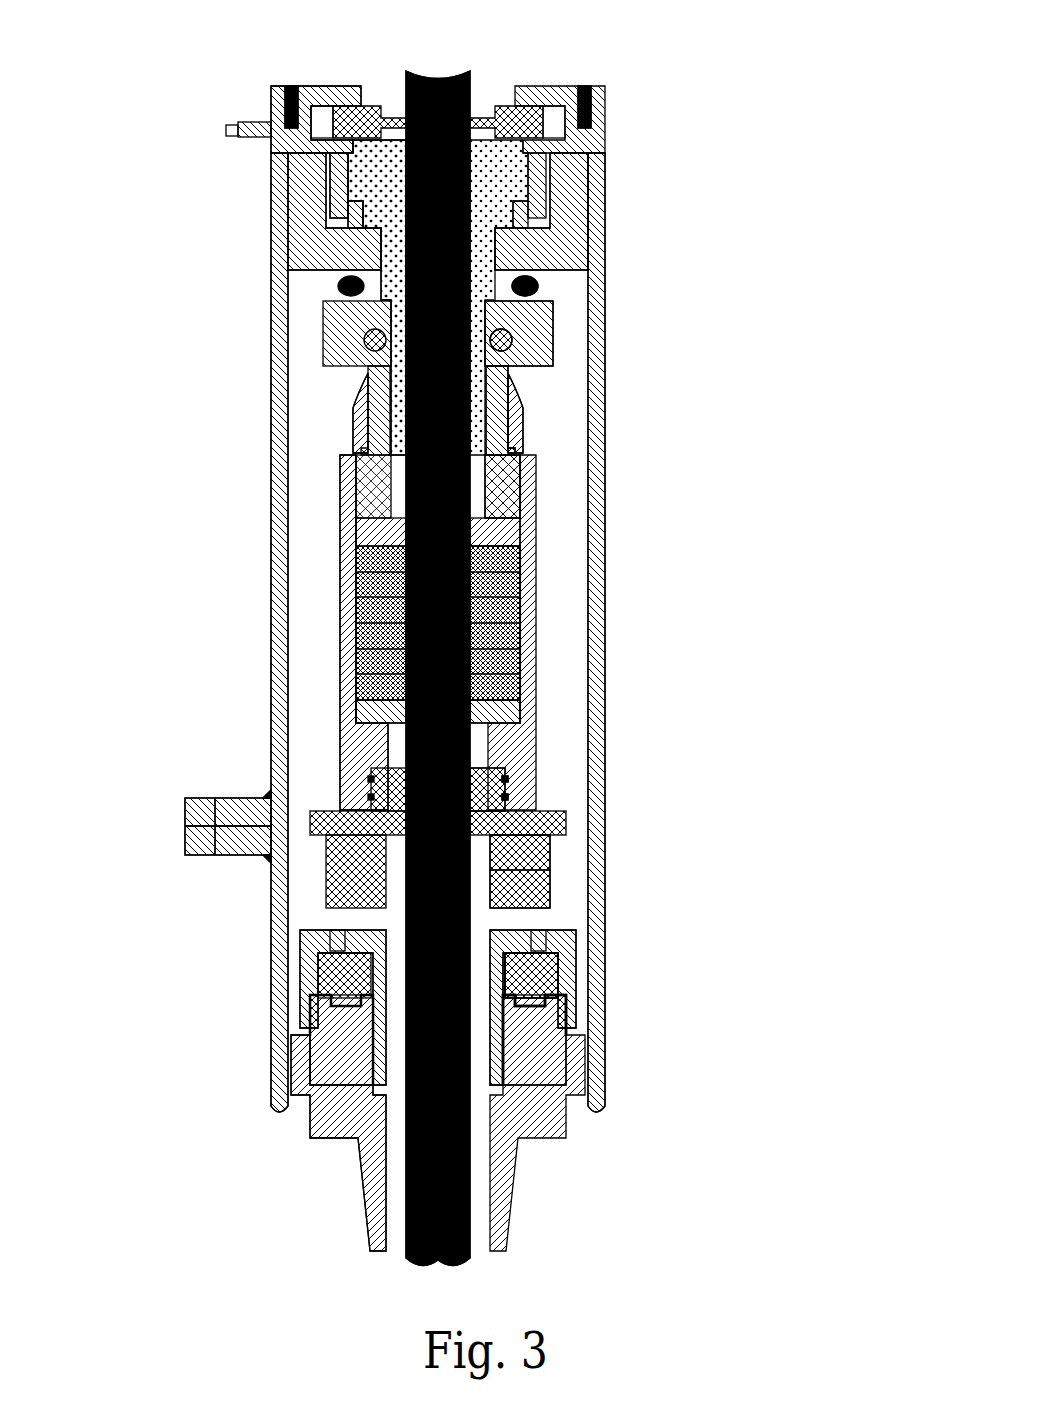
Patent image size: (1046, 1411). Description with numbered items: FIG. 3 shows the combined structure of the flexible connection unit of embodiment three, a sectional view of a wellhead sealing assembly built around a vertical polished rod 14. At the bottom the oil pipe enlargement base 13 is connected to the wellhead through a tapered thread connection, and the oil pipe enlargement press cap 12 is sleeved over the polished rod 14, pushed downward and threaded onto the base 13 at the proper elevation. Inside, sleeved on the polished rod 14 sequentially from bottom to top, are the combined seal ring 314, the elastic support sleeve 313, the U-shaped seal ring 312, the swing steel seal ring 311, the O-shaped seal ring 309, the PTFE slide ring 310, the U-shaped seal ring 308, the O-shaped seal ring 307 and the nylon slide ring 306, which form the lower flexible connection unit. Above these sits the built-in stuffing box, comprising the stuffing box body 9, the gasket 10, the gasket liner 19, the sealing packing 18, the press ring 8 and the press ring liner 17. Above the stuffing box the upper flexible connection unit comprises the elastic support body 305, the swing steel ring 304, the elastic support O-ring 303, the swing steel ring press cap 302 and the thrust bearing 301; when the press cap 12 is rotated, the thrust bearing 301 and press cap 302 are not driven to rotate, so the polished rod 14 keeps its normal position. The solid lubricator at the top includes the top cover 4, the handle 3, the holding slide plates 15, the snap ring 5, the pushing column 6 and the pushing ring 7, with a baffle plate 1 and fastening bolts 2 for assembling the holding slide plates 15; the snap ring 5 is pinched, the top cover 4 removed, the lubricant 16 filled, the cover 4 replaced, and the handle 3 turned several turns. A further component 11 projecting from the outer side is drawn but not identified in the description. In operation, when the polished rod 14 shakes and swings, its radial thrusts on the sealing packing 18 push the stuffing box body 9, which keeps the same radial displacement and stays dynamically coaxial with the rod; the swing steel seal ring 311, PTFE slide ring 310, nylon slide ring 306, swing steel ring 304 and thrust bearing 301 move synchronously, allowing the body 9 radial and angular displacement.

The baffle plate 1 is at (256, 80).
The fastening bolts 2 is at (224, 93).
The handle 3 is at (211, 155).
The top cover 4 is at (219, 632).
The snap ring 5 is at (249, 239).
The pushing column 6 is at (266, 268).
The pushing ring 7 is at (278, 297).
The press ring 8 is at (259, 444).
The stuffing box body 9 is at (269, 632).
The gasket 10 is at (272, 654).
The mounting flange 11 is at (204, 772).
The oil pipe enlargement press cap 12 is at (262, 1007).
The oil pipe enlargement base 13 is at (262, 1143).
The polished rod 14 is at (304, 668).
The holding slide plates 15 is at (656, 79).
The lubricant 16 is at (614, 177).
The thrust bearing 301 is at (640, 221).
The swing steel ring press cap 302 is at (626, 290).
The elastic support O-ring 303 is at (629, 309).
The swing steel ring 304 is at (627, 393).
The elastic support body 305 is at (638, 425).
The press ring liner 17 is at (609, 486).
The sealing packing 18 is at (602, 607).
The gasket liner 19 is at (602, 650).
The nylon slide ring 306 is at (619, 727).
The O-shaped seal ring 307 is at (634, 756).
The U-shaped seal ring 308 is at (629, 822).
The O-shaped seal ring 309 is at (629, 872).
The PTFE slide ring 310 is at (629, 994).
The swing steel seal ring 311 is at (636, 992).
The U-shaped seal ring 312 is at (636, 1026).
The elastic support sleeve 313 is at (635, 1081).
The combined seal ring 314 is at (678, 692).